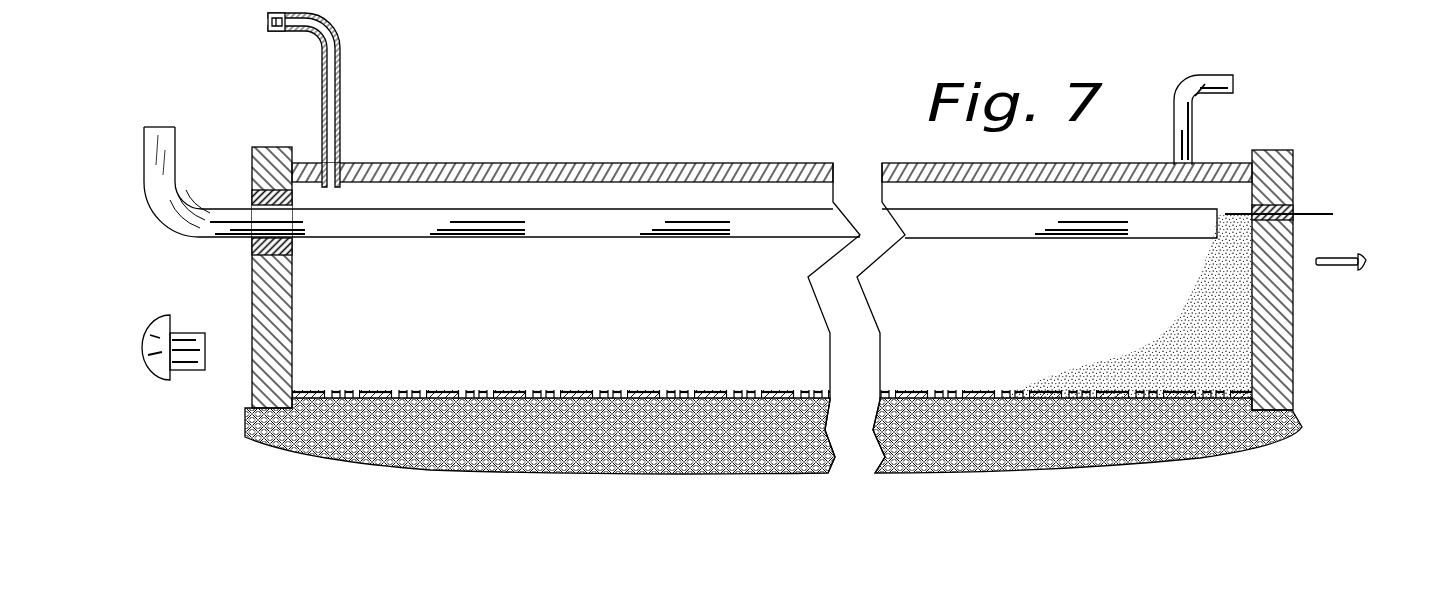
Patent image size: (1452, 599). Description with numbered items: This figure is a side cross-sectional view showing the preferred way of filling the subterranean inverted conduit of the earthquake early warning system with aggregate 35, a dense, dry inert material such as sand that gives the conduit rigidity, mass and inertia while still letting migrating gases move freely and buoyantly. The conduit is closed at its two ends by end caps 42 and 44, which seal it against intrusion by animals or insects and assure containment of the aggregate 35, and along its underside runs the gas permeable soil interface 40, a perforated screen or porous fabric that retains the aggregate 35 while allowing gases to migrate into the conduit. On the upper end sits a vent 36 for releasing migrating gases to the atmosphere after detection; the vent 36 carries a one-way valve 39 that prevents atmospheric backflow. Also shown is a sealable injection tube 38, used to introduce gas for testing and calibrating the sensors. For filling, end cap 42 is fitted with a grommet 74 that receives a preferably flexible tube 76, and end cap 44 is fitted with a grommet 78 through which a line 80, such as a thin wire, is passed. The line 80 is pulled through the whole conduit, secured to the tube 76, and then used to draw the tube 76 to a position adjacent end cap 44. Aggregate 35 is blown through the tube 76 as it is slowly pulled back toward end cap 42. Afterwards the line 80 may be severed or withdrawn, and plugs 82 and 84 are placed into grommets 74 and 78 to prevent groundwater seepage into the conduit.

The aggregate 35 is at (1227, 320).
The vent 36 is at (343, 75).
The injection tube 38 is at (1190, 120).
The one-way valve 39 is at (268, 22).
The gas permeable soil interface 40 is at (648, 390).
The end cap 42 is at (262, 365).
The end cap 44 is at (1275, 168).
The grommet 74 is at (252, 192).
The tube 76 is at (155, 127).
The grommet 78 is at (1293, 206).
The line 80 is at (1333, 214).
The plug 82 is at (150, 330).
The plug 84 is at (1366, 262).